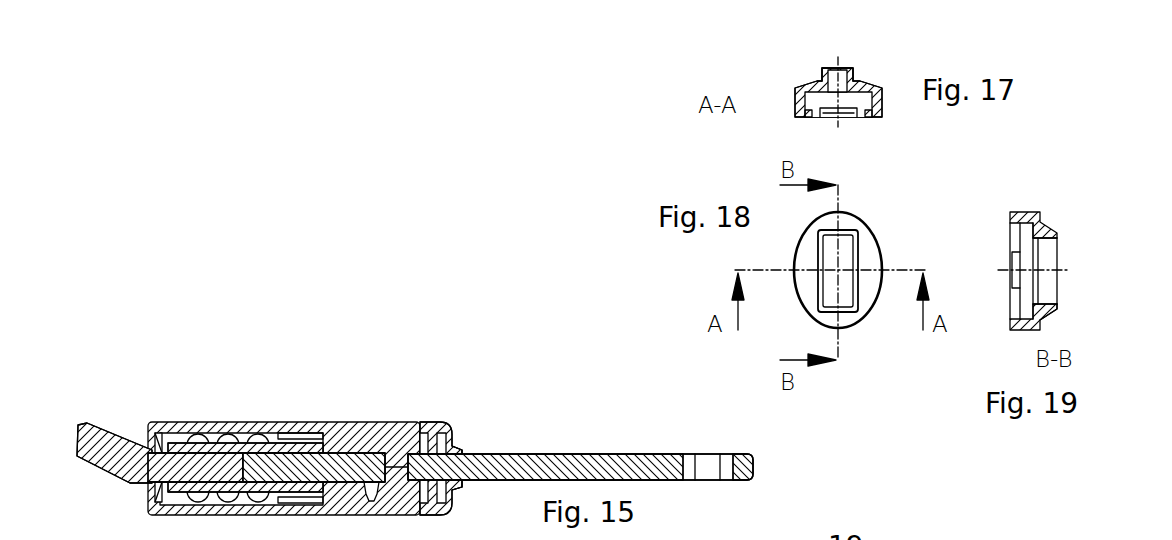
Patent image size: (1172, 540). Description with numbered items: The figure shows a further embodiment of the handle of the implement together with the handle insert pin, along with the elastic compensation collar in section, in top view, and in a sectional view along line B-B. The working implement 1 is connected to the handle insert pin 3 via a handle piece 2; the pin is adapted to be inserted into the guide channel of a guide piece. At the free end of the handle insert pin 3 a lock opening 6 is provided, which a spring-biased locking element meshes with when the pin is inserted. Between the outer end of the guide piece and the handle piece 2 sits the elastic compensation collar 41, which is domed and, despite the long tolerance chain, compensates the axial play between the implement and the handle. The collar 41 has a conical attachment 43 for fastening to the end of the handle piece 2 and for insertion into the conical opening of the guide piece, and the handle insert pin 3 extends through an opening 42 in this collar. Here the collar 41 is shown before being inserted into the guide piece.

In FIG. 15, the working implement 1 is at (100, 430).
In FIG. 15, the handle piece 2 is at (222, 420).
In FIG. 15, the handle insert pin 3 is at (557, 460).
In FIG. 15, the lock opening 6 is at (707, 470).
In FIG. 15, the compensation collar 41 is at (438, 425).
In FIG. 17, the compensation collar 41 is at (882, 104).
In FIG. 18, the compensation collar 41 is at (868, 225).
In FIG. 19, the compensation collar 41 is at (1018, 212).
In FIG. 17, the opening 42 is at (842, 75).
In FIG. 18, the opening 42 is at (845, 293).
In FIG. 19, the opening 42 is at (1047, 240).
In FIG. 15, the conical attachment 43 is at (462, 450).
In FIG. 19, the conical attachment 43 is at (1050, 312).